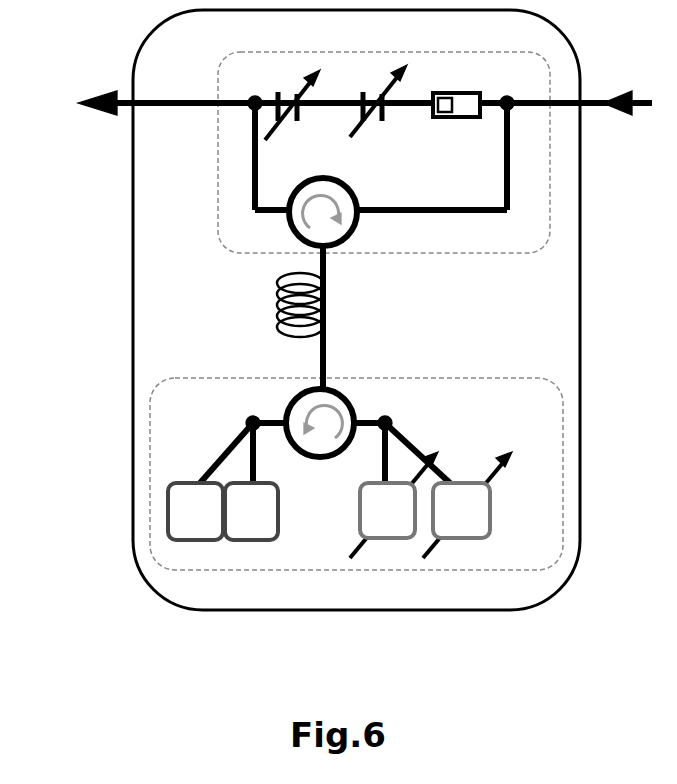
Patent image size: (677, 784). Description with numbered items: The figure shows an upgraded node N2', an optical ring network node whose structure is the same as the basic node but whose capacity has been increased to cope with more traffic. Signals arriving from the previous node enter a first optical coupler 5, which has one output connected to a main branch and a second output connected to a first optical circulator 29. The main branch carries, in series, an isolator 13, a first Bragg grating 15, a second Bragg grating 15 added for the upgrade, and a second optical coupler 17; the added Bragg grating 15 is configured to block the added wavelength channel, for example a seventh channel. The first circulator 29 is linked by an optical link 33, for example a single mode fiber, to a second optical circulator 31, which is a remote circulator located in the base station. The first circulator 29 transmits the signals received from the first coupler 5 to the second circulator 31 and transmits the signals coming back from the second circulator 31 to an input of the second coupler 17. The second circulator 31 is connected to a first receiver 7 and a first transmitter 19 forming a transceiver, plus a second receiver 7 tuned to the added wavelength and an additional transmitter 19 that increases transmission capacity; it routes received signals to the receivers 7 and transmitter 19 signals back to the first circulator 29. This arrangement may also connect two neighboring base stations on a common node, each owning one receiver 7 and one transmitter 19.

The upgraded node N2' is at (313, 310).
The second optical coupler 17 is at (253, 97).
The Bragg grating 15 is at (277, 93).
The isolator 13 is at (475, 93).
The first optical coupler 5 is at (507, 96).
The first optical circulator 29 is at (350, 236).
The optical link 33 is at (275, 325).
The second optical circulator 31 is at (287, 400).
The receiver 7 is at (188, 540).
The transmitter 19 is at (392, 540).